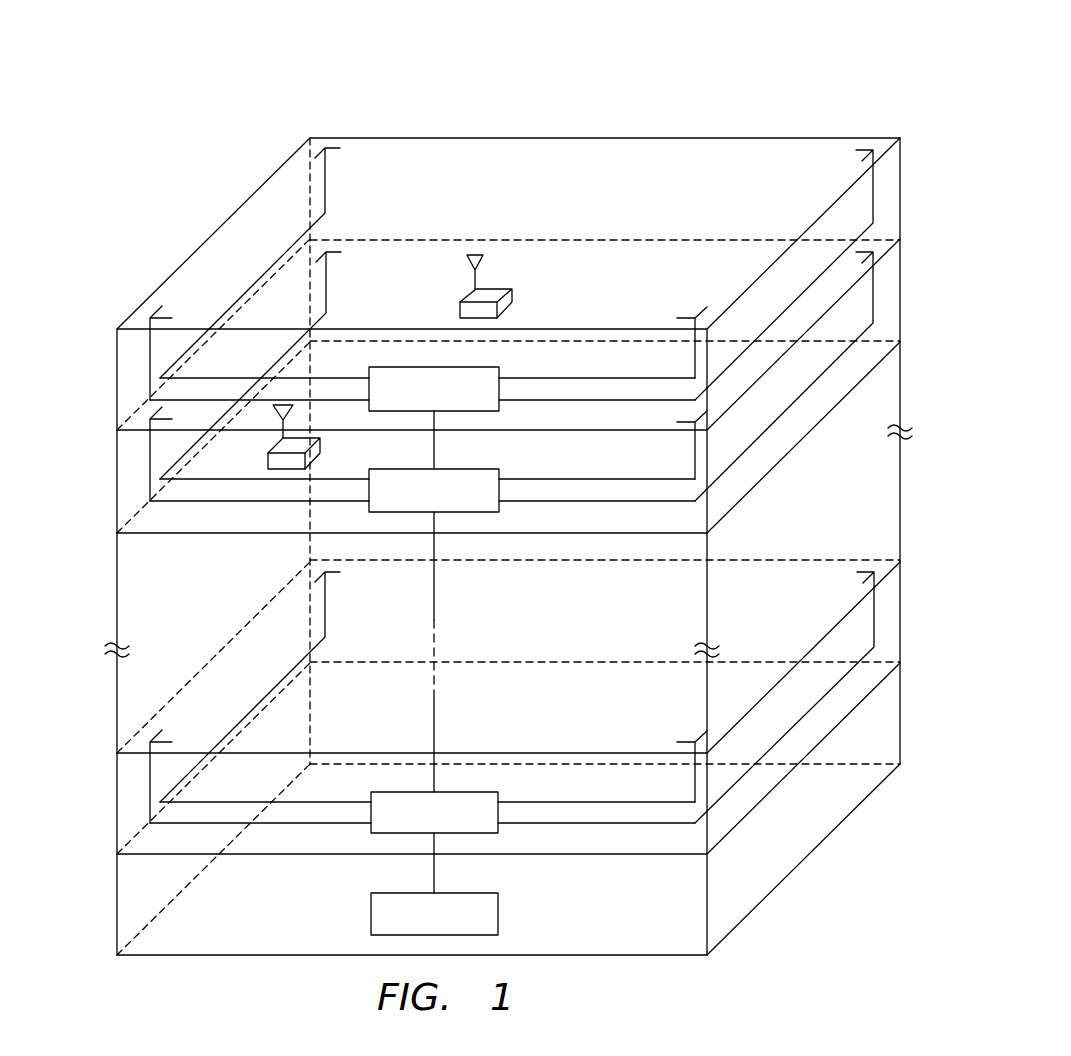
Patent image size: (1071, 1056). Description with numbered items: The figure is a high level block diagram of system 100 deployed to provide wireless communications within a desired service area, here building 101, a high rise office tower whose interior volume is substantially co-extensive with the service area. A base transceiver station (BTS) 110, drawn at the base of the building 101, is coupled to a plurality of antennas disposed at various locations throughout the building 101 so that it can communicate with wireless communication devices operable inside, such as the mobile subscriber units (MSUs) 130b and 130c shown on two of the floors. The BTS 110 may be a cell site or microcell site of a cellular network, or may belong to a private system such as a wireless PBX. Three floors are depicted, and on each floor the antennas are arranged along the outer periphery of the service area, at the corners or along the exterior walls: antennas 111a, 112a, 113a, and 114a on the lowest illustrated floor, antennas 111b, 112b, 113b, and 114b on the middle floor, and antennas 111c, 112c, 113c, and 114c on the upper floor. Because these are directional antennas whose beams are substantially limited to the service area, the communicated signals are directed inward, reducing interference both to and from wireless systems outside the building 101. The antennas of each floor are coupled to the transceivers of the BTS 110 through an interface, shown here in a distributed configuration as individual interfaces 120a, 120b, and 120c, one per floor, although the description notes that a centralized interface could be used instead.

The system 100 is at (750, 960).
The building 101 is at (798, 857).
The base transceiver station (BTS) 110 is at (498, 912).
The interface 120a is at (498, 792).
The interface 120b is at (499, 470).
The interface 120c is at (499, 368).
The mobile subscriber unit (MSU) 130b is at (320, 447).
The mobile subscriber unit (MSU) 130c is at (493, 291).
The antenna 111a is at (158, 740).
The antenna 111b is at (146, 416).
The antenna 111c is at (148, 314).
The antenna 112a is at (692, 740).
The antenna 112b is at (690, 426).
The antenna 112c is at (692, 316).
The antenna 113a is at (868, 575).
The antenna 113b is at (880, 246).
The antenna 113c is at (864, 146).
The antenna 114a is at (338, 574).
The antenna 114b is at (335, 253).
The antenna 114c is at (332, 146).